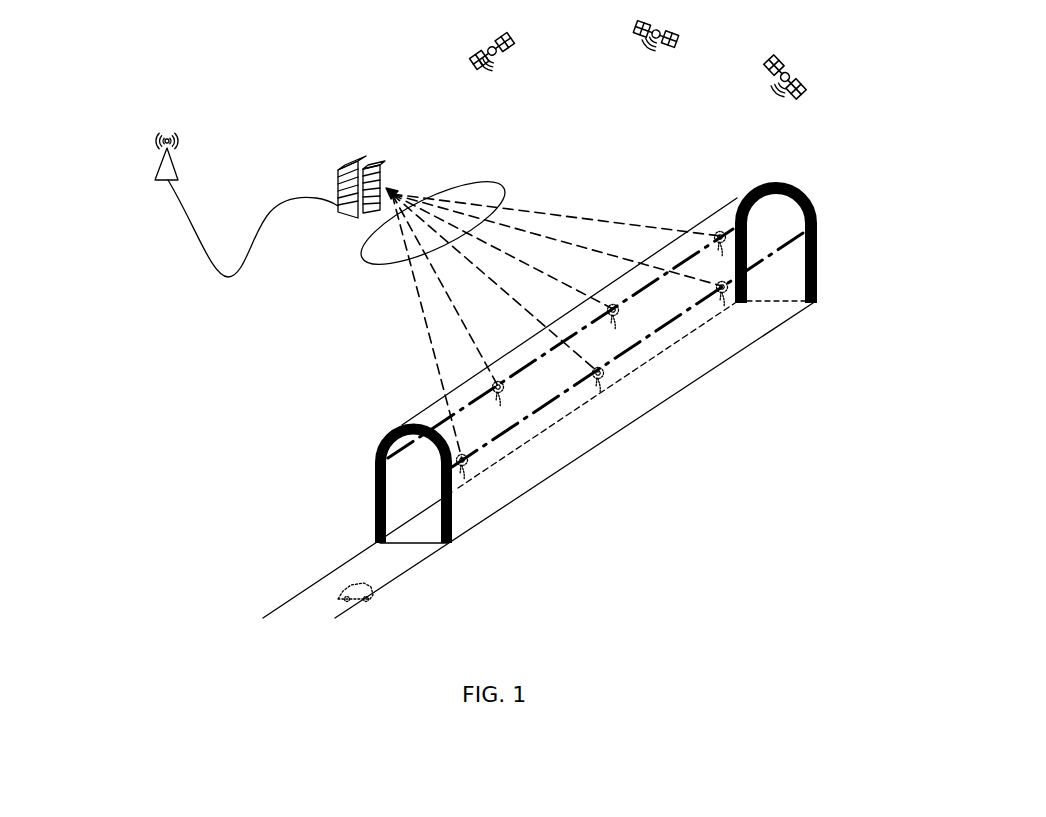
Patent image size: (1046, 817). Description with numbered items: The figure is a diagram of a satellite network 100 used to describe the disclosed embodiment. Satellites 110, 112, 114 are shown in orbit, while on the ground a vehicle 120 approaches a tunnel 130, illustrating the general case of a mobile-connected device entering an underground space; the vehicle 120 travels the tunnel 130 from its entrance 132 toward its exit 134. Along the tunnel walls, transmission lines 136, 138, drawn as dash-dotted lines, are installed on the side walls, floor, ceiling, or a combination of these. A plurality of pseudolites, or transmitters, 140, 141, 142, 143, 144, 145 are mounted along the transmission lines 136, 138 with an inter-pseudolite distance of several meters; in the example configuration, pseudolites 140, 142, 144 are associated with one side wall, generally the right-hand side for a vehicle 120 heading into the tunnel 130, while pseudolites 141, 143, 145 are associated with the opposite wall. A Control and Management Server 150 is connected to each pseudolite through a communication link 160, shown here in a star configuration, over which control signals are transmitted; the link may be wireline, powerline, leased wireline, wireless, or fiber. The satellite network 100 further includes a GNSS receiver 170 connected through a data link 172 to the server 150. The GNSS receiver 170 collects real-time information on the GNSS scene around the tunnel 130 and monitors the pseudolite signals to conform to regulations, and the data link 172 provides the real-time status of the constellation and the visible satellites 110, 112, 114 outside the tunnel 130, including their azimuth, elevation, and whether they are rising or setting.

The satellite network 100 is at (315, 55).
The satellite 110 is at (475, 43).
The satellite 112 is at (635, 37).
The satellite 114 is at (763, 70).
The vehicle 120 is at (340, 592).
The tunnel 130 is at (460, 517).
The entrance 132 is at (385, 437).
The exit 134 is at (811, 208).
The transmission line 136 is at (663, 328).
The transmission line 138 is at (513, 370).
The pseudolite 140 is at (460, 485).
The pseudolite 141 is at (495, 385).
The pseudolite 142 is at (600, 397).
The pseudolite 143 is at (612, 307).
The pseudolite 144 is at (722, 307).
The pseudolite 145 is at (712, 227).
The Control and Management Server 150 is at (327, 168).
The communication link 160 is at (362, 274).
The GNSS receiver 170 is at (158, 165).
The data link 172 is at (202, 248).